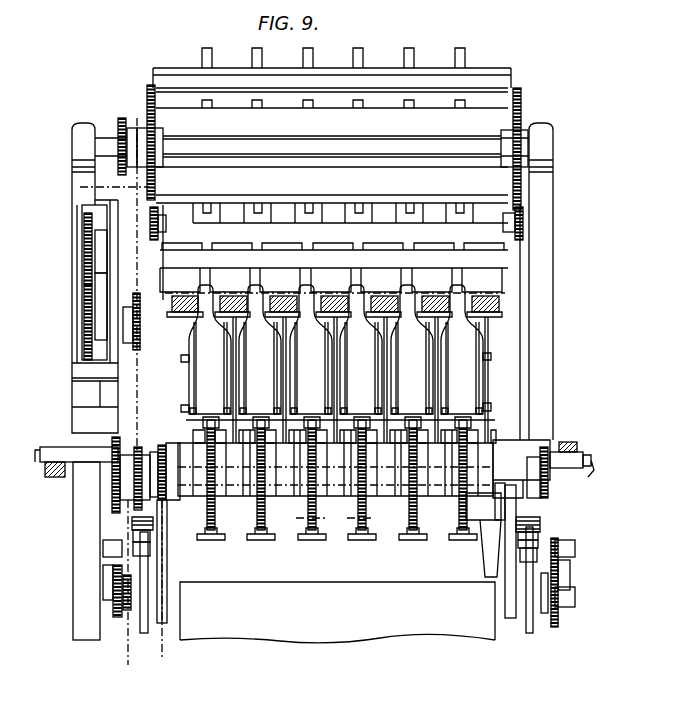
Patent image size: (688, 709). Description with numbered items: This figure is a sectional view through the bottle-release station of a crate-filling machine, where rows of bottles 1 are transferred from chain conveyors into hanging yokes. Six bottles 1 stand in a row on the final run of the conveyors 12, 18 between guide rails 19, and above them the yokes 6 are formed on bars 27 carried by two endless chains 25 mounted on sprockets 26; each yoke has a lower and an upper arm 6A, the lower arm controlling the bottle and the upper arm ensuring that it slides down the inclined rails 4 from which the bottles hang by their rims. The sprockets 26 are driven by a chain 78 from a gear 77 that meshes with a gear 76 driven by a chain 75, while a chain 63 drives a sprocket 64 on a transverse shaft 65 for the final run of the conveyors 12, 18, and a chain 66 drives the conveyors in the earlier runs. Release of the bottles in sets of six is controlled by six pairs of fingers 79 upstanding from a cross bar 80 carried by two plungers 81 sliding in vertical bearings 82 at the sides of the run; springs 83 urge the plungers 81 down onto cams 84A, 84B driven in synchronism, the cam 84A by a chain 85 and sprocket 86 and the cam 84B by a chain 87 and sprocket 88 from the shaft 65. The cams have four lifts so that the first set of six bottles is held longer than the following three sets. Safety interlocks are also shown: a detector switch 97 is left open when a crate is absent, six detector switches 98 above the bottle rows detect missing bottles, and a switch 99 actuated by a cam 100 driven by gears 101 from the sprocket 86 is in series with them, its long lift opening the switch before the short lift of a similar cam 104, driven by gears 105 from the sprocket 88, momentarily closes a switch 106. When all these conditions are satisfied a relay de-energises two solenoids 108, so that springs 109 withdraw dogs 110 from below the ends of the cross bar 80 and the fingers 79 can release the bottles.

The bottle 1 is at (208, 335).
The rails 4 is at (190, 297).
The yokes 6 is at (357, 53).
The yoke arm 6A is at (258, 277).
The endless chain conveyors 12 is at (334, 520).
The additional chain conveyors 18 is at (256, 527).
The guide rails 19 is at (182, 405).
The endless chains 25 is at (147, 230).
The sprockets 26 is at (147, 117).
The bars 27 is at (372, 72).
The chain 63 is at (160, 623).
The sprocket 64 is at (162, 510).
The transverse shaft 65 is at (170, 495).
The chain 66 is at (125, 443).
The chain 75 is at (142, 403).
The gear 76 is at (83, 323).
The gear 77 is at (83, 264).
The chain 78 is at (117, 189).
The fingers 79 is at (292, 418).
The cross bar 80 is at (100, 457).
The plungers 81 is at (150, 526).
The vertical bearings 82 is at (137, 512).
The springs 83 is at (152, 533).
The cam 84A is at (150, 583).
The cam 84B is at (556, 592).
The chain 85 is at (132, 630).
The sprocket 86 is at (130, 610).
The chain 87 is at (560, 560).
The sprocket 88 is at (543, 607).
The detector switch 97 is at (480, 550).
The detector switches 98 is at (258, 218).
The switch 99 is at (100, 573).
The cam 100 is at (110, 580).
The gears 101 is at (113, 572).
The cam 104 is at (563, 620).
The gears 105 is at (565, 627).
The switch 106 is at (566, 568).
The solenoids 108 is at (46, 445).
The springs 109 is at (33, 447).
The dogs 110 is at (42, 478).